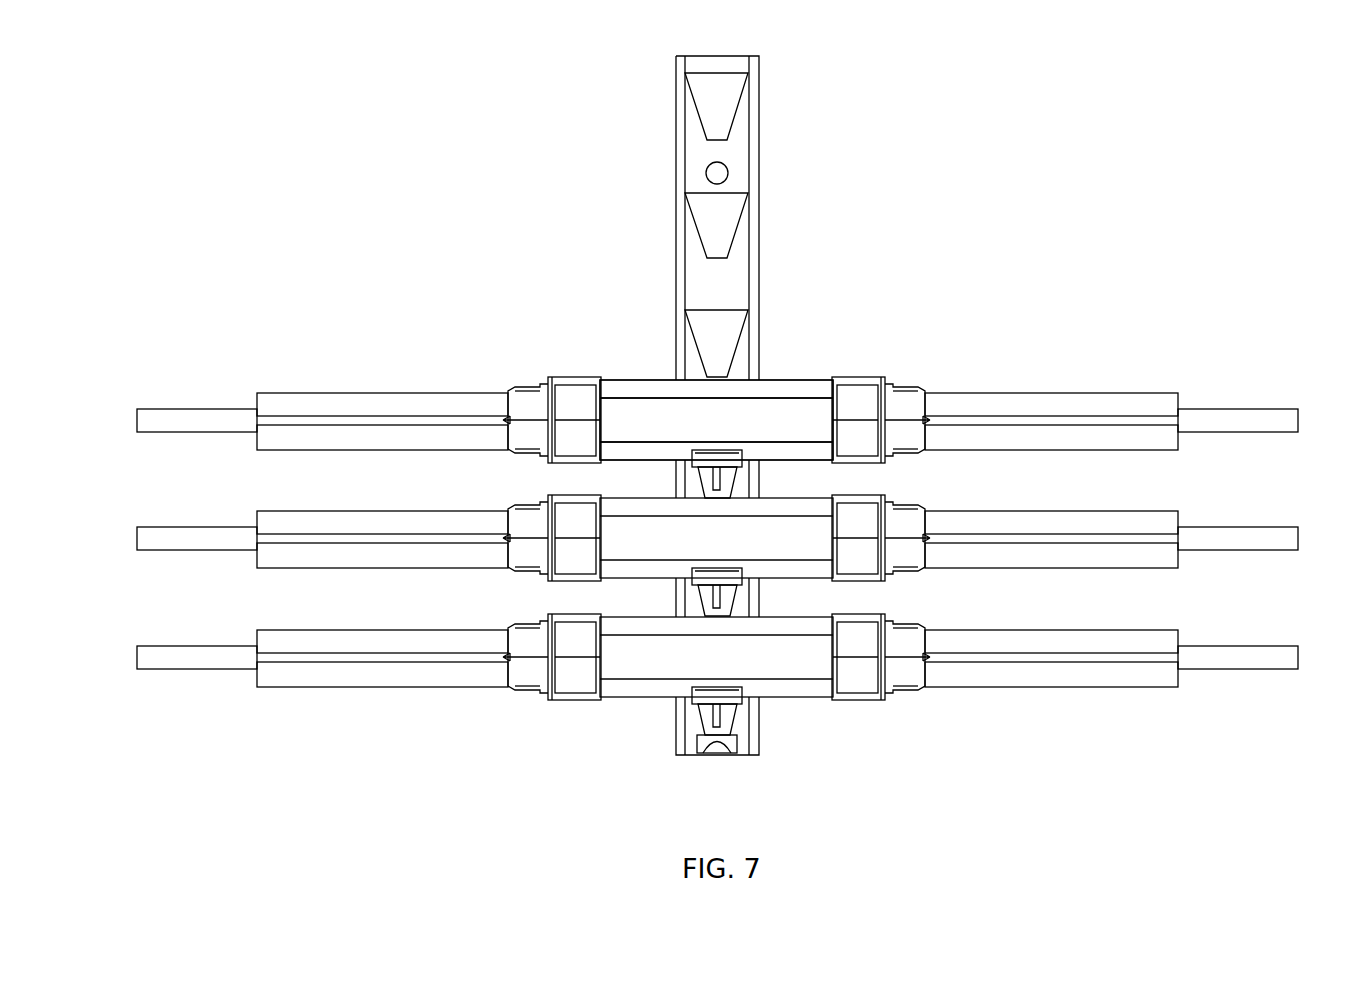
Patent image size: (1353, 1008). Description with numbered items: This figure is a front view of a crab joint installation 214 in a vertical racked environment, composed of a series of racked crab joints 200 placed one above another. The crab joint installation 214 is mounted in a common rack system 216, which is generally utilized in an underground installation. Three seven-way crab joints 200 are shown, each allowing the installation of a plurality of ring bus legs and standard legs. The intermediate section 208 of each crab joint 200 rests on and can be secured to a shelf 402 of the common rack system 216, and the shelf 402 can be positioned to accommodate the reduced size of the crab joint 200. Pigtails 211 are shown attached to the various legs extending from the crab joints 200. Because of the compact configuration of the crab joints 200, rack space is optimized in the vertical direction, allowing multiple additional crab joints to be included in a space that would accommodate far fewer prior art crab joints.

The crab joint 200 is at (623, 377).
The intermediate section 208 is at (778, 417).
The pigtails 211 is at (377, 520).
The crab joint installation 214 is at (863, 405).
The common rack system 216 is at (727, 165).
The shelf 402 is at (738, 740).